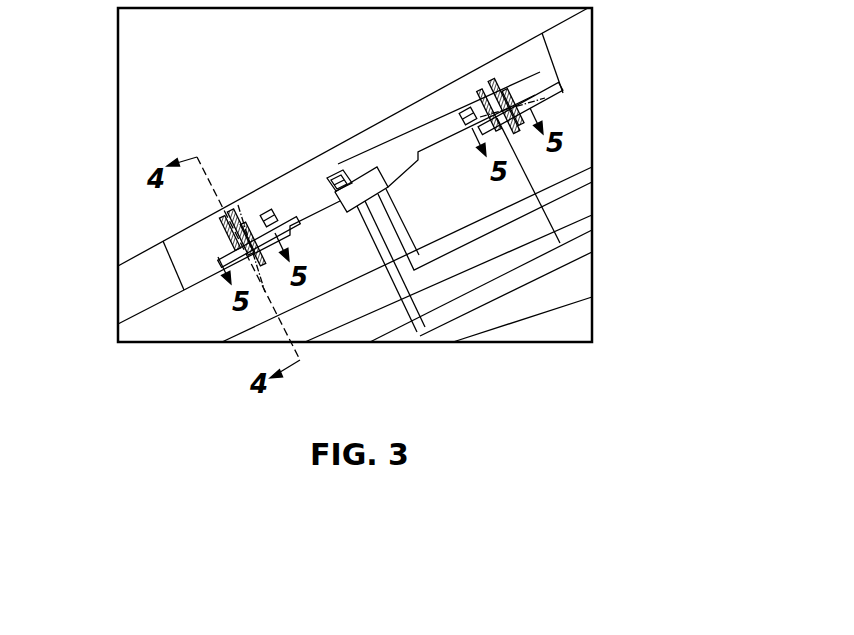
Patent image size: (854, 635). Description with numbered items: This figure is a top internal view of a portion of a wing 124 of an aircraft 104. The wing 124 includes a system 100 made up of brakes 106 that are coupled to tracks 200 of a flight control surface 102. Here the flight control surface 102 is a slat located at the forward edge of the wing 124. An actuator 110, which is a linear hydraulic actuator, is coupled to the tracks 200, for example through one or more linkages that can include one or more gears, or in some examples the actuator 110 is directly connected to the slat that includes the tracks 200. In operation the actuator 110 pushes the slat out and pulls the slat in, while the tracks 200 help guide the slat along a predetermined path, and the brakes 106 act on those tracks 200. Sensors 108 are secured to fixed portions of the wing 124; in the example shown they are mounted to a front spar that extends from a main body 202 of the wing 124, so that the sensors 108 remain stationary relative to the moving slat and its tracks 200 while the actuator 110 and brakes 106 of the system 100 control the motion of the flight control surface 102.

The system 100 is at (192, 246).
The flight control surface 102 is at (430, 103).
The aircraft 104 is at (603, 130).
The brakes 106 is at (221, 262).
The sensors 108 is at (273, 212).
The actuator 110 is at (371, 166).
The wing 124 is at (157, 322).
The tracks 200 is at (244, 210).
The main body 202 is at (349, 257).